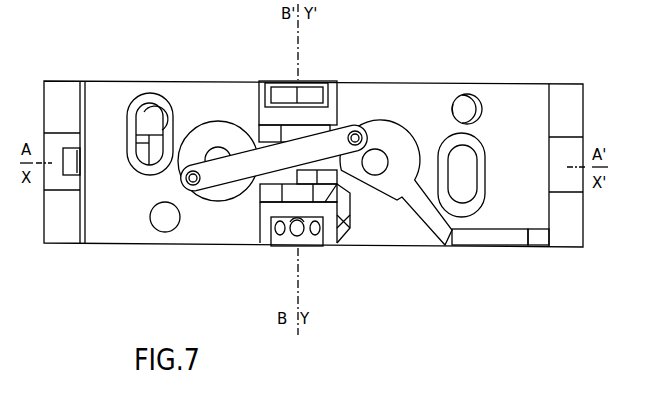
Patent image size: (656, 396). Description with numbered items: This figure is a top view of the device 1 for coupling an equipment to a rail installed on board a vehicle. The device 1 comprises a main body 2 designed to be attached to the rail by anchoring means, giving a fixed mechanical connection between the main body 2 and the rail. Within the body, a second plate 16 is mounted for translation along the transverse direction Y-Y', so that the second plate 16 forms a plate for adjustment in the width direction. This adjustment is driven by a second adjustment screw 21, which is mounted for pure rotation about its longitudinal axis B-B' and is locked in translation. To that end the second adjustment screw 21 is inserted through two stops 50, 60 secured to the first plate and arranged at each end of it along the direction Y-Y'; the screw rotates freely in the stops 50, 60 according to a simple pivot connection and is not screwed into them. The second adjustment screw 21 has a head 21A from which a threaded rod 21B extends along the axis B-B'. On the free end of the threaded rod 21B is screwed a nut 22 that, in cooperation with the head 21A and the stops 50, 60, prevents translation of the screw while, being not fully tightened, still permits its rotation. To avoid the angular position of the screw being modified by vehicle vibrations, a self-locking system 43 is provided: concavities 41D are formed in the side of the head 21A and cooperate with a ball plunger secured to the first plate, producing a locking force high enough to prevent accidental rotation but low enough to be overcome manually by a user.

The device 1 is at (135, 258).
The main body 2 is at (62, 93).
The second plate 16 is at (197, 95).
The second adjustment screw 21 is at (270, 244).
The head 21A is at (318, 240).
The threaded rod 21B is at (290, 132).
The nut 22 is at (308, 92).
The concavities 41D is at (296, 231).
The self-locking system 43 is at (303, 238).
The stop 50 is at (323, 208).
The stop 60 is at (327, 117).